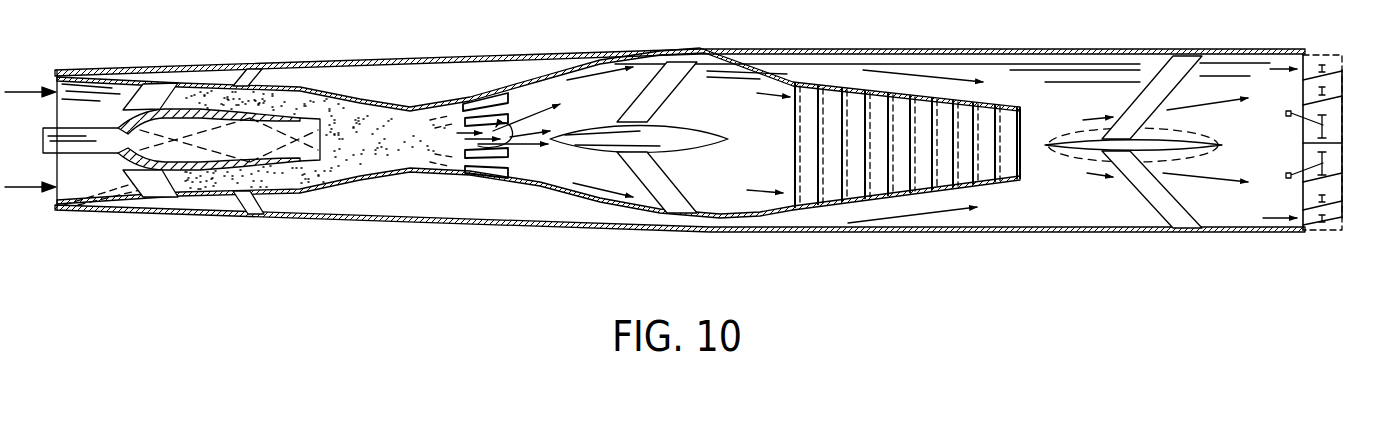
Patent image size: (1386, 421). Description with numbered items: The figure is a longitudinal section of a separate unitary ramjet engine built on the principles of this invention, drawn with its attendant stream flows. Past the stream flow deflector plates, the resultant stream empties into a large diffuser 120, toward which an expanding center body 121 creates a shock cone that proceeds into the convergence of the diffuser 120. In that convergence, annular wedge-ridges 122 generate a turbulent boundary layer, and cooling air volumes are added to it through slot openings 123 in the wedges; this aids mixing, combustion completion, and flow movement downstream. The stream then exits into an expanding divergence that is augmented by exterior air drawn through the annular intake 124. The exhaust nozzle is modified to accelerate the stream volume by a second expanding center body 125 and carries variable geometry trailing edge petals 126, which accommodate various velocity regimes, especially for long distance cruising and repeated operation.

The diffuser 120 is at (547, 163).
The expanding center body 121 is at (690, 138).
The annular wedge-ridges 122 is at (853, 107).
The slot openings 123 is at (828, 101).
The annular intake 124 is at (710, 51).
The second expanding center body 125 is at (1070, 140).
The variable geometry trailing edge petals 126 is at (1332, 101).